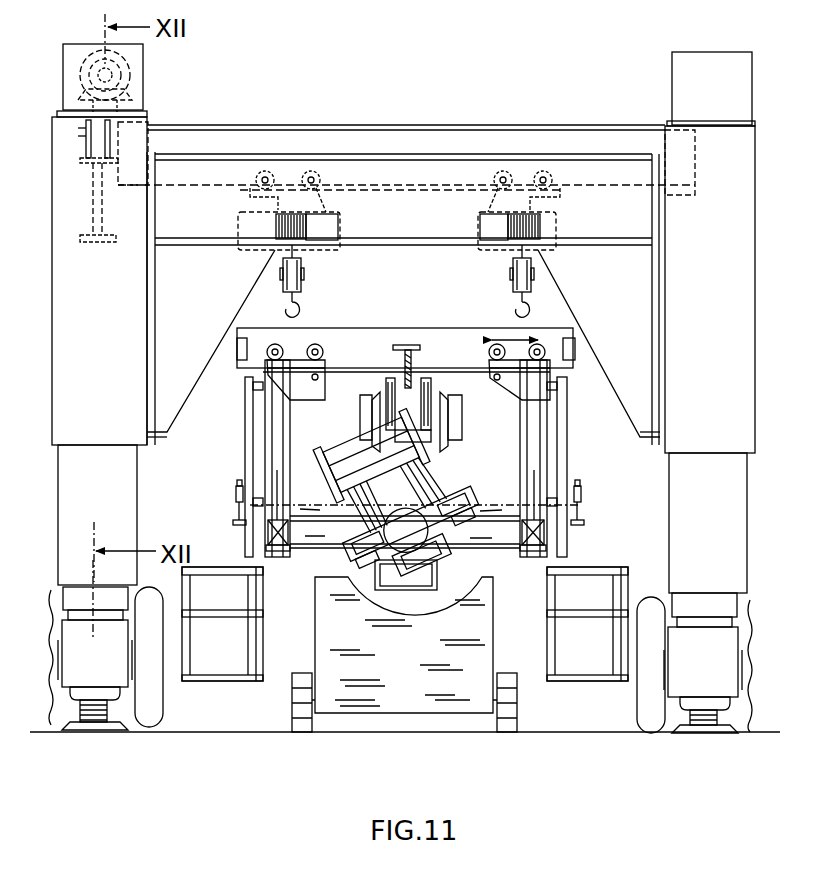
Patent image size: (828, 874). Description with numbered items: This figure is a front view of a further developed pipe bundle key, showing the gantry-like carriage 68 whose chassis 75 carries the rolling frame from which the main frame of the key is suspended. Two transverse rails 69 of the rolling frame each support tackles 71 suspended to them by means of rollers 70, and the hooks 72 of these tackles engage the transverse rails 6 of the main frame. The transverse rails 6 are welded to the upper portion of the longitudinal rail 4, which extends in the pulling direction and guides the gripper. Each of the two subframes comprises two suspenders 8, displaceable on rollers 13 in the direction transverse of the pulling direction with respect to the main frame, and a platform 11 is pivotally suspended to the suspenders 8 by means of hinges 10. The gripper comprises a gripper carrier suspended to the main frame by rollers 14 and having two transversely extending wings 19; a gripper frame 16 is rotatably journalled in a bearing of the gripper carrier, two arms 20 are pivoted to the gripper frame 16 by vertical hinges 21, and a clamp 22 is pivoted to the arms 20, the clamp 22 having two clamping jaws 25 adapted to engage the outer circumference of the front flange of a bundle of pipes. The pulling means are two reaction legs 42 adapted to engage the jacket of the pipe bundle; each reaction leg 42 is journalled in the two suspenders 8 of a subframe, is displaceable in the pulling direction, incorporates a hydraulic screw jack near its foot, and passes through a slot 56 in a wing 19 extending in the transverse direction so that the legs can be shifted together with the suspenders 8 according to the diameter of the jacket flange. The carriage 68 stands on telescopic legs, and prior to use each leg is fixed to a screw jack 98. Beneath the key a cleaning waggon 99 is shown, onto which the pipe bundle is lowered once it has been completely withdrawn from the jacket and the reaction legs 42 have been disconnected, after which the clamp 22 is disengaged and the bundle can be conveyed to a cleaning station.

The longitudinal rail 4 is at (409, 343).
The transverse rails 6 is at (445, 343).
The suspenders 8 is at (279, 448).
The hinges 10 is at (558, 390).
The platform 11 is at (632, 592).
The rollers 13 is at (303, 350).
The rollers 14 is at (428, 398).
The gripper frame 16 is at (367, 449).
The wings 19 is at (322, 514).
The arms 20 is at (392, 490).
The vertical hinges 21 is at (442, 500).
The clamp 22 is at (357, 545).
The clamping jaws 25 is at (387, 558).
The reaction legs 42 is at (268, 528).
The slot 56 is at (296, 546).
The carriage 68 is at (688, 157).
The transverse rails 69 is at (402, 180).
The rollers 70 is at (310, 171).
The tackles 71 is at (488, 230).
The hooks 72 is at (298, 302).
The chassis 75 is at (192, 327).
The screw jack 98 is at (719, 736).
The cleaning waggon 99 is at (330, 641).